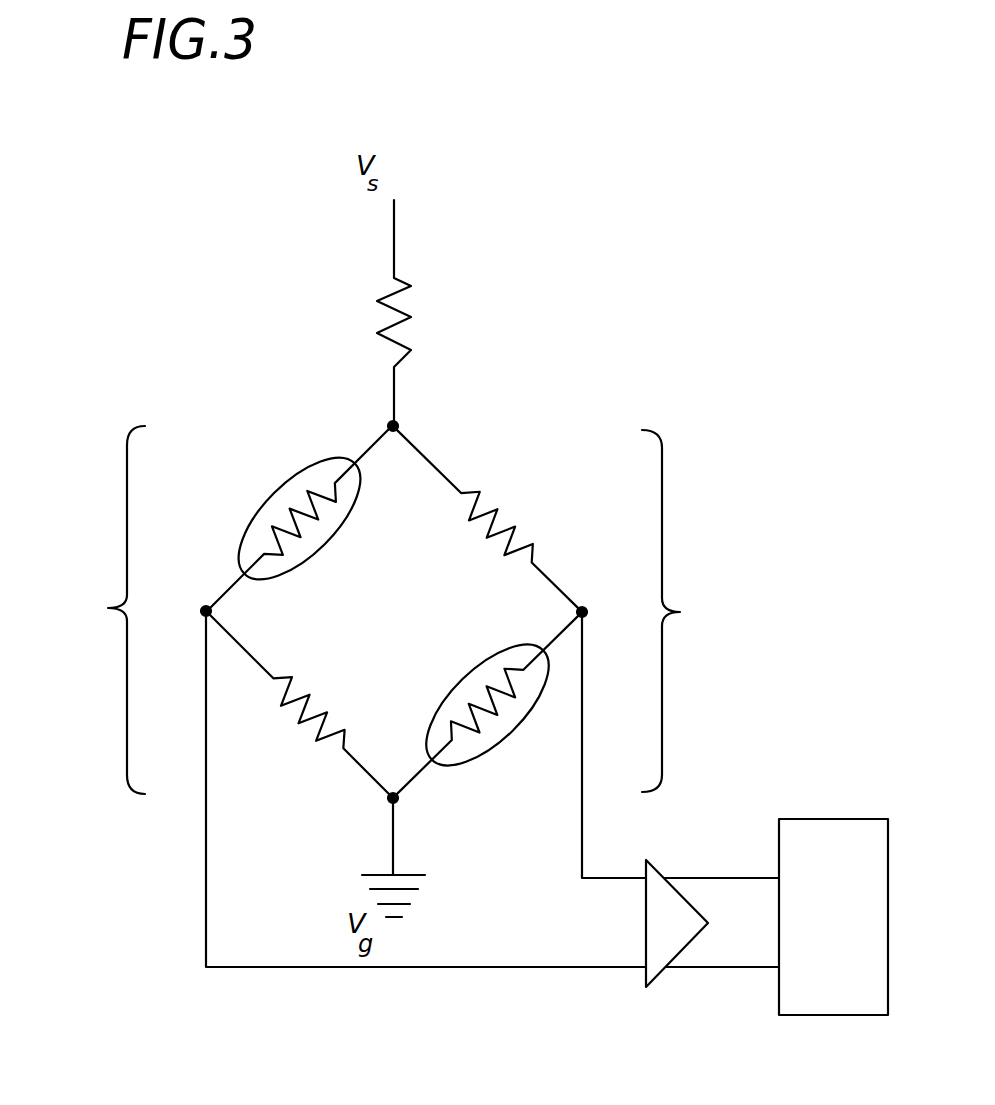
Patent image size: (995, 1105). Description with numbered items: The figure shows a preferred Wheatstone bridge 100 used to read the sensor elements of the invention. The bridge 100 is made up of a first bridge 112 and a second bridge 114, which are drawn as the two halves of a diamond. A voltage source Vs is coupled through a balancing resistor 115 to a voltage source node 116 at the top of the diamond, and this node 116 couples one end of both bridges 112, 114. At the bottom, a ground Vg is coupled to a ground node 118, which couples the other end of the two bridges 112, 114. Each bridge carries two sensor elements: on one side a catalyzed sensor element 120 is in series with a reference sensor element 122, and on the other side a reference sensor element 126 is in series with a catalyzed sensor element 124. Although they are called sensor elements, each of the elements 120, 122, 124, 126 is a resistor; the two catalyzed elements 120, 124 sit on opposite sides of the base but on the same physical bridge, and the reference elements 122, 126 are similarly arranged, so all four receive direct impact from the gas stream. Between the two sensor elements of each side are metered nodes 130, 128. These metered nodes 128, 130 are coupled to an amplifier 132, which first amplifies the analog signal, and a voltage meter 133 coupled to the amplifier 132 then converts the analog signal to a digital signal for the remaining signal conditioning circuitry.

The wheatstone bridge 100 is at (588, 258).
The first bridge 112 is at (92, 610).
The second bridge 114 is at (696, 611).
The balancing resistor 115 is at (377, 333).
The voltage source node 116 is at (402, 426).
The ground node 118 is at (393, 798).
The catalyzed sensor element 120 is at (277, 496).
The reference sensor element 122 is at (302, 727).
The catalyzed sensor element 124 is at (513, 732).
The reference sensor element 126 is at (497, 517).
The metered node 128 is at (582, 610).
The metered node 130 is at (206, 611).
The amplifier 132 is at (656, 914).
The voltage meter 133 is at (860, 935).